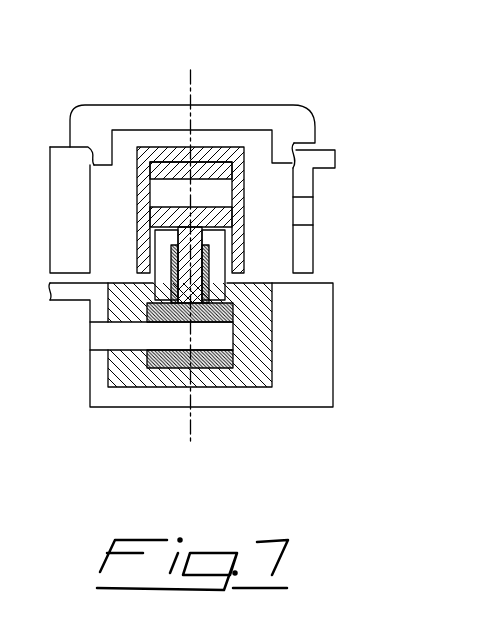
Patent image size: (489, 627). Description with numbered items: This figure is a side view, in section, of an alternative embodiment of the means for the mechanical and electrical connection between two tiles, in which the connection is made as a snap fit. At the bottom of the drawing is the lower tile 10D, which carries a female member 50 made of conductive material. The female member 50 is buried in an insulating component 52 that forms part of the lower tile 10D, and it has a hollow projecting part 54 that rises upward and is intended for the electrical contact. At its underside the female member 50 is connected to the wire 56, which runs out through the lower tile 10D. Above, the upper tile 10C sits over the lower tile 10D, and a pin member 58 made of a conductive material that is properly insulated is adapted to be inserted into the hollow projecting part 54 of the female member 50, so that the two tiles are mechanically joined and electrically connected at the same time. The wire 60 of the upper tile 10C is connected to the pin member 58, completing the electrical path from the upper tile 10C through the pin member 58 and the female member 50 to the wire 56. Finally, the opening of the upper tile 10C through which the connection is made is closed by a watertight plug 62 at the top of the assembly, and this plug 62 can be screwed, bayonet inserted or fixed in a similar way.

The watertight plug 62 is at (215, 122).
The upper tile 10C is at (318, 160).
The wire 60 is at (303, 212).
The pin member 58 is at (178, 252).
The hollow projecting part 54 is at (209, 265).
The female member 50 is at (160, 357).
The insulating component 52 is at (248, 368).
The wire 56 is at (98, 335).
The lower tile 10D is at (282, 345).